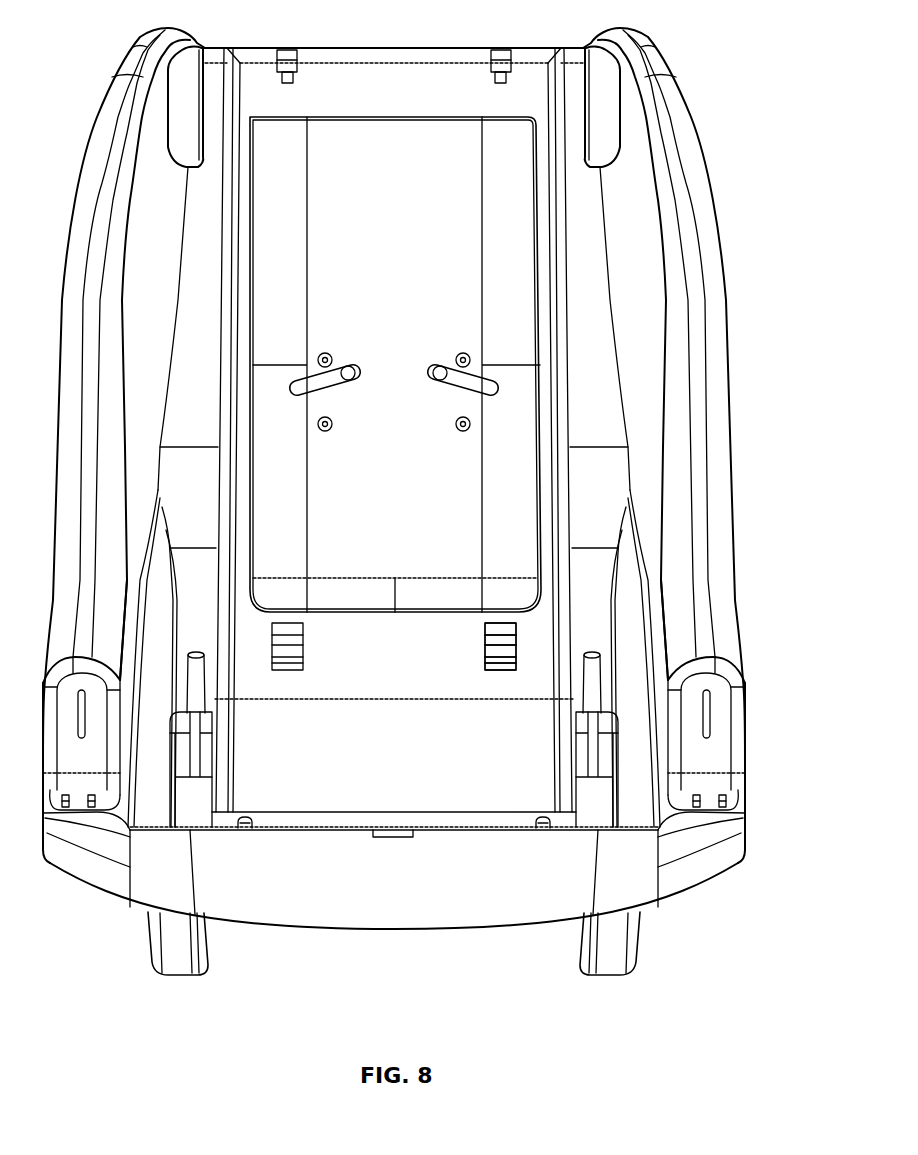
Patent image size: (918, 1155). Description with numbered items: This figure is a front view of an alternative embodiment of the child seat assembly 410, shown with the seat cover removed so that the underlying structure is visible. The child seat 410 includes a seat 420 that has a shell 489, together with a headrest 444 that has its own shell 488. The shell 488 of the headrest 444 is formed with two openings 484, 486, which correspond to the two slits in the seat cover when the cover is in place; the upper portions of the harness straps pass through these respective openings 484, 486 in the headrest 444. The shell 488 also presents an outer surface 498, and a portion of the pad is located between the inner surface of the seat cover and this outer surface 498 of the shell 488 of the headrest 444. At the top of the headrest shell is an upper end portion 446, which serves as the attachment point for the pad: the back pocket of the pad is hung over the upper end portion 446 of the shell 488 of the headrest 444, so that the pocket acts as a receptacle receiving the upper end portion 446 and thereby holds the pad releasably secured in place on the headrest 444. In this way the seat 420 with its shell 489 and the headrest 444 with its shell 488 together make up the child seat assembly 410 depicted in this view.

The child seat assembly 410 is at (694, 22).
The seat 420 is at (683, 147).
The headrest 444 is at (387, 140).
The upper end portion 446 is at (328, 112).
The opening 484 is at (352, 367).
The opening 486 is at (437, 367).
The shell 488 is at (413, 247).
The shell 489 is at (413, 671).
The outer surface 498 is at (522, 262).